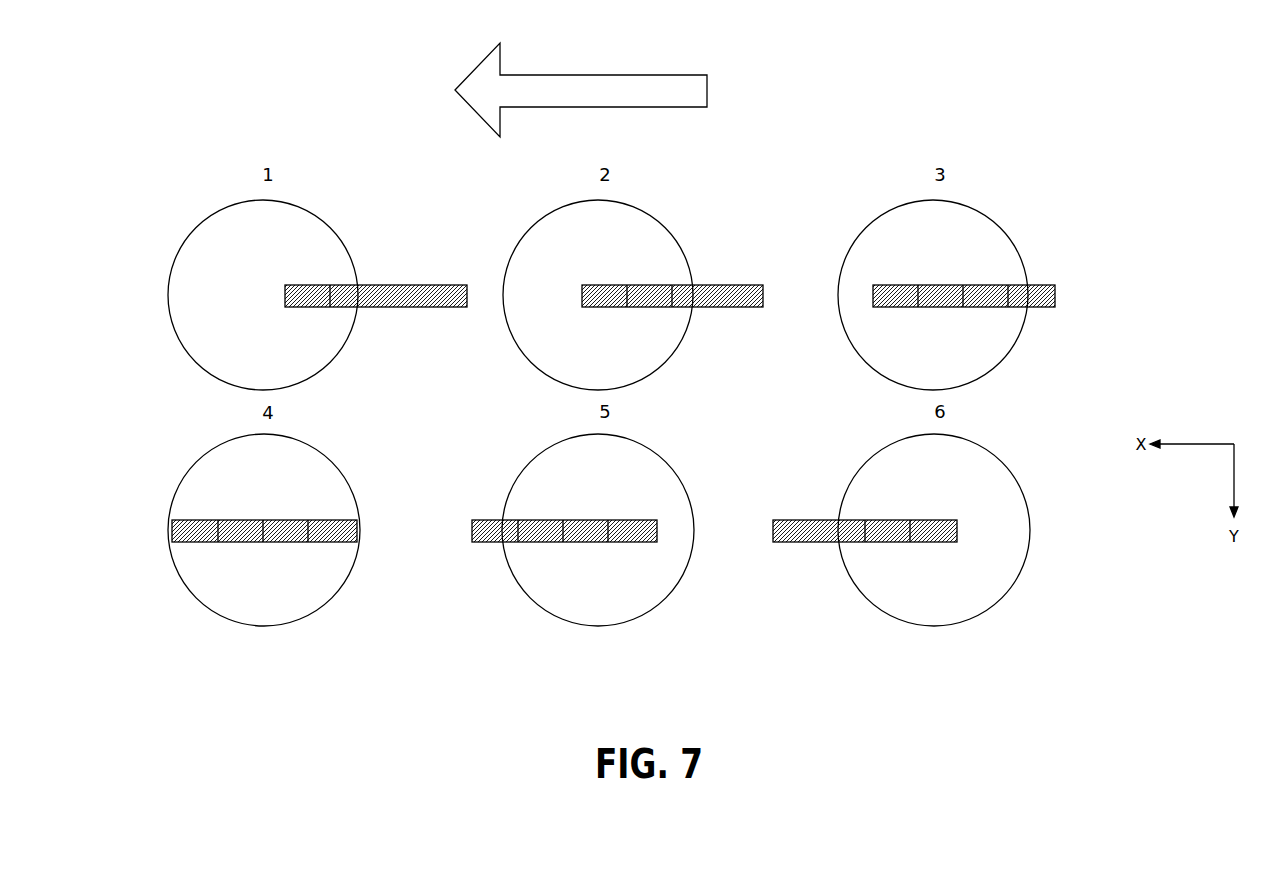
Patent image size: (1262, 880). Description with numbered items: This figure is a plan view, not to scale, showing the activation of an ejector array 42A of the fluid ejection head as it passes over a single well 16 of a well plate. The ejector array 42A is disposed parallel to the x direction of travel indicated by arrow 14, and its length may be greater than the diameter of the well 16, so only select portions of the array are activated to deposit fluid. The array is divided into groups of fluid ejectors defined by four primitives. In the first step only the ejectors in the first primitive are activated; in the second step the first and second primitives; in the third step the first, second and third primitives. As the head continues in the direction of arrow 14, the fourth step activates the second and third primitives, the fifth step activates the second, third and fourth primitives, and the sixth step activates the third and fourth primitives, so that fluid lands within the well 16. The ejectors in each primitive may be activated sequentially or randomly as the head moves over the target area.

The arrow 14 is at (687, 96).
The well 16 is at (563, 390).
The ejector array 42A is at (596, 378).